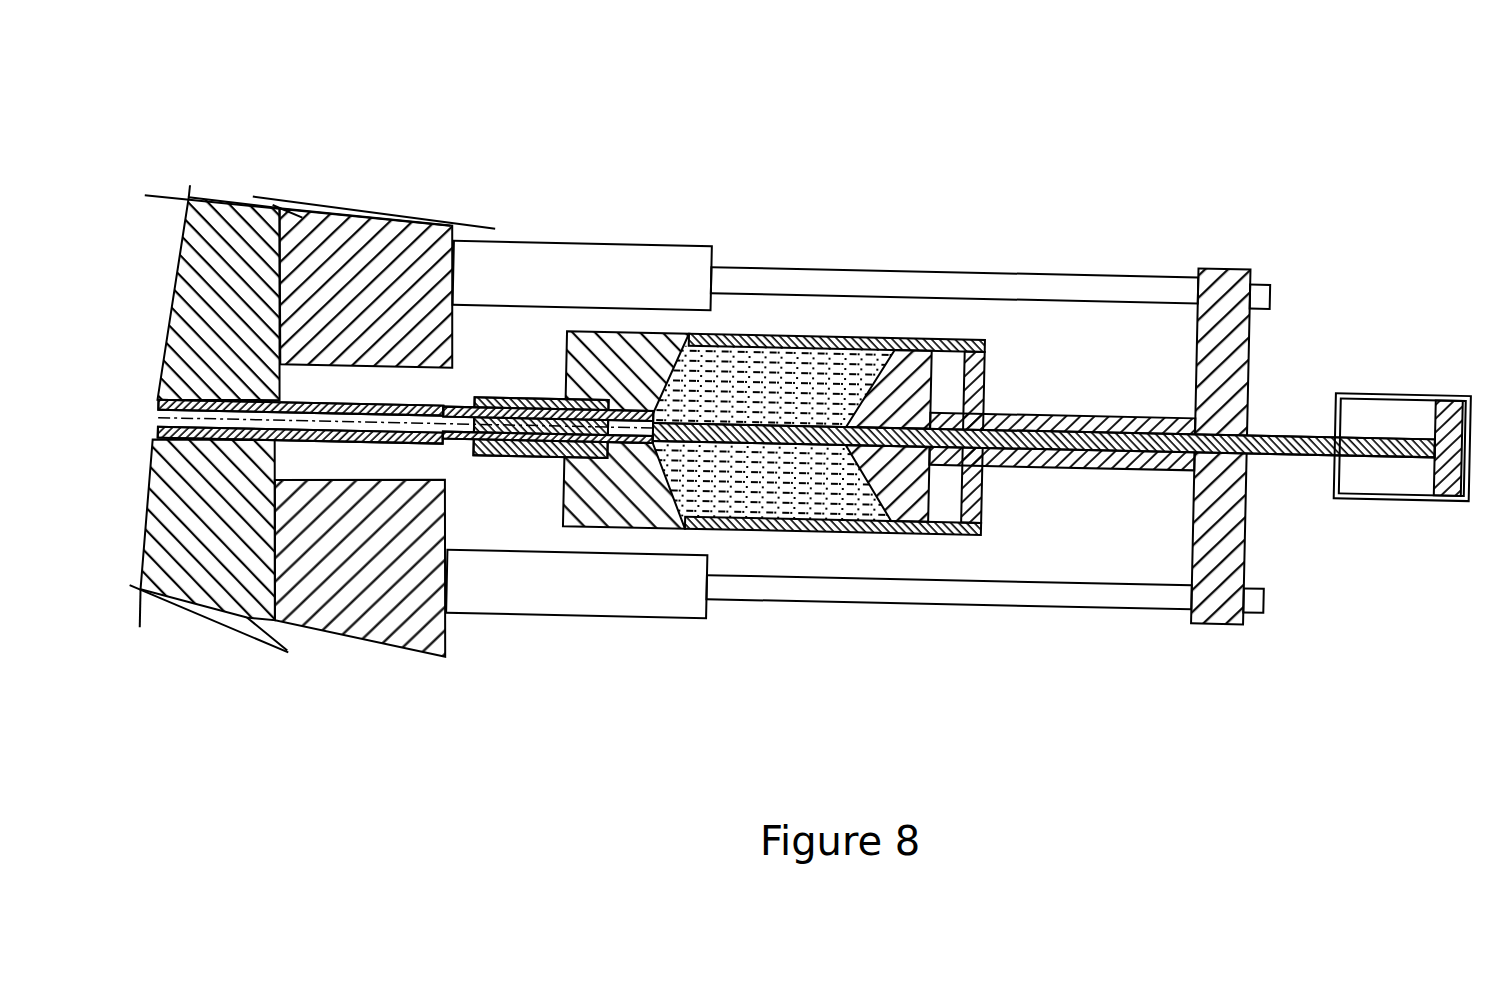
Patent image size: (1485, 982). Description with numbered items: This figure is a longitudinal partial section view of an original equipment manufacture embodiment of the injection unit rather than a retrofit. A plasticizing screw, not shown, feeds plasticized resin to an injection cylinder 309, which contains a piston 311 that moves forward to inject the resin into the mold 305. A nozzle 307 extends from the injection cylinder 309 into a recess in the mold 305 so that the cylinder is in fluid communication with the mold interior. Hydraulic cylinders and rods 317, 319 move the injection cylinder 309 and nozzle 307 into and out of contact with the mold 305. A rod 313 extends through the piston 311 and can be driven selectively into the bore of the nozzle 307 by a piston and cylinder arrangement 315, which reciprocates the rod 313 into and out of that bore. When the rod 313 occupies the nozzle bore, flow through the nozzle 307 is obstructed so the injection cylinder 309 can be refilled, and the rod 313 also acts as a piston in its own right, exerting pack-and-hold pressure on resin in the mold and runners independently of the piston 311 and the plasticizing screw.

The mold 305 is at (321, 361).
The nozzle 307 is at (428, 456).
The injection cylinder 309 is at (816, 417).
The piston 311 is at (983, 433).
The rod 313 is at (1043, 557).
The piston and cylinder arrangement 315 is at (1395, 335).
The hydraulic cylinder 317 is at (615, 408).
The hydraulic rod 319 is at (951, 417).